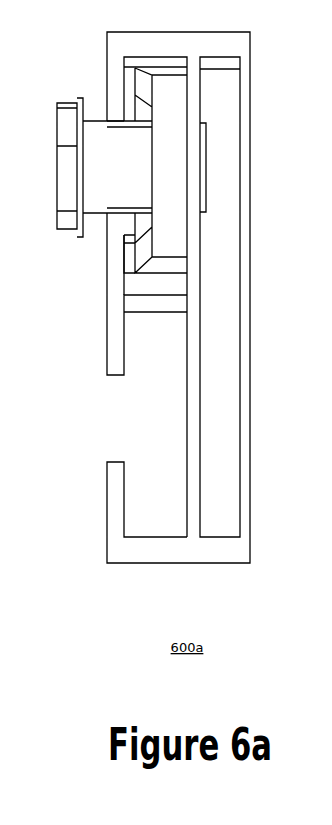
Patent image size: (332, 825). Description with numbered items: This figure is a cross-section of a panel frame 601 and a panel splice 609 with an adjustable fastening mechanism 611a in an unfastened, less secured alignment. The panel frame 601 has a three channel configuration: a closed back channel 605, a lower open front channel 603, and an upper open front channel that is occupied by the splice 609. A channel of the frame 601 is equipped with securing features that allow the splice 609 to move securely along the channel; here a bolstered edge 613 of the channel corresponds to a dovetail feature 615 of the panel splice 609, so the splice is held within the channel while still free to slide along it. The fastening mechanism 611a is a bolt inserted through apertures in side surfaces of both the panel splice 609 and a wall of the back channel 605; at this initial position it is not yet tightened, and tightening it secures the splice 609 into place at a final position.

The panel frame 601 is at (252, 168).
The lower open front channel 603 is at (155, 297).
The closed back channel 605 is at (220, 297).
The panel splice 609 is at (161, 170).
The adjustable fastening mechanism 611a is at (50, 146).
The bolstered edge 613 is at (110, 101).
The dovetail feature 615 is at (128, 257).